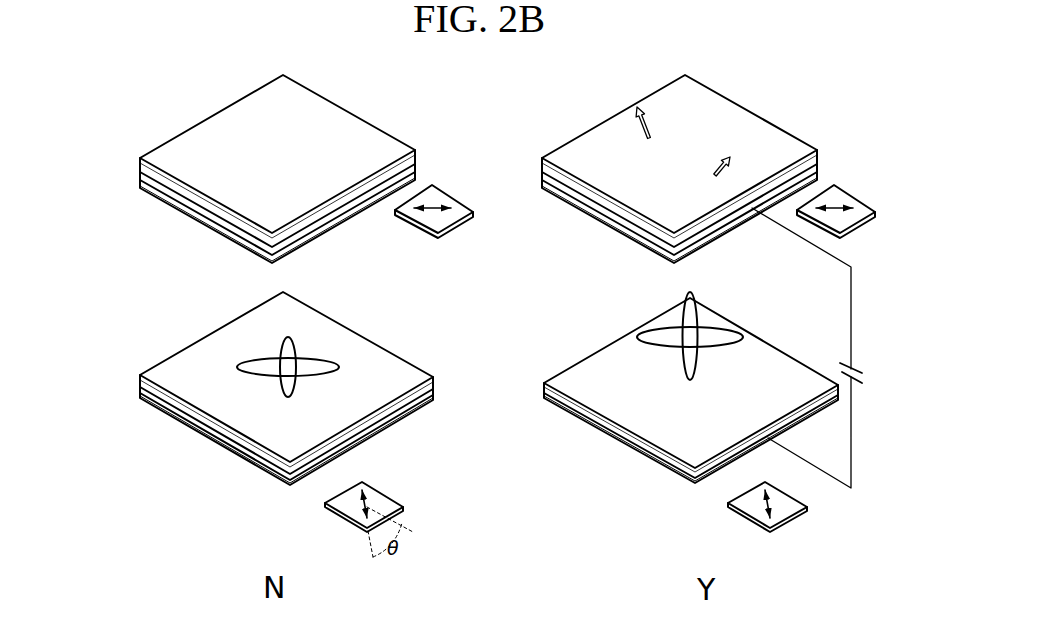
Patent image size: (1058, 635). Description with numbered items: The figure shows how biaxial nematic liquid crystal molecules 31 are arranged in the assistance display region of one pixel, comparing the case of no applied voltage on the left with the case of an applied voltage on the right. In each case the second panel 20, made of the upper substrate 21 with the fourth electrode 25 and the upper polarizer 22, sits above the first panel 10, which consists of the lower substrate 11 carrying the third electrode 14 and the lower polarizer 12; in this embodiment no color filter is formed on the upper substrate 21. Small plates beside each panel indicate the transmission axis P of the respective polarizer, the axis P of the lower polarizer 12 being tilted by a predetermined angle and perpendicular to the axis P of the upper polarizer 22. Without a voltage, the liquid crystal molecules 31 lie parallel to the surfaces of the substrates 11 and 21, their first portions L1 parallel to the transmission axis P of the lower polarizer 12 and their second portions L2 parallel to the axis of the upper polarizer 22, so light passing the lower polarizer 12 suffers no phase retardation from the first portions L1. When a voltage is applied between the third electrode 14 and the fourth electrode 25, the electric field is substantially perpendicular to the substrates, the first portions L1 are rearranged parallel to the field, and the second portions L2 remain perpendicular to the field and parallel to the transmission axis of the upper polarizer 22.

The second panel 20 is at (88, 127).
The upper polarizer 22 is at (162, 150).
The upper substrate 21 is at (140, 171).
The fourth electrode 25 is at (160, 194).
The first panel 10 is at (88, 360).
The third electrode 14 is at (157, 374).
The lower substrate 11 is at (155, 407).
The lower polarizer 12 is at (170, 417).
The liquid crystal molecules 31 is at (236, 356).
The first portion L1 is at (288, 397).
The second portion L2 is at (327, 367).
The transmission axis P is at (428, 206).